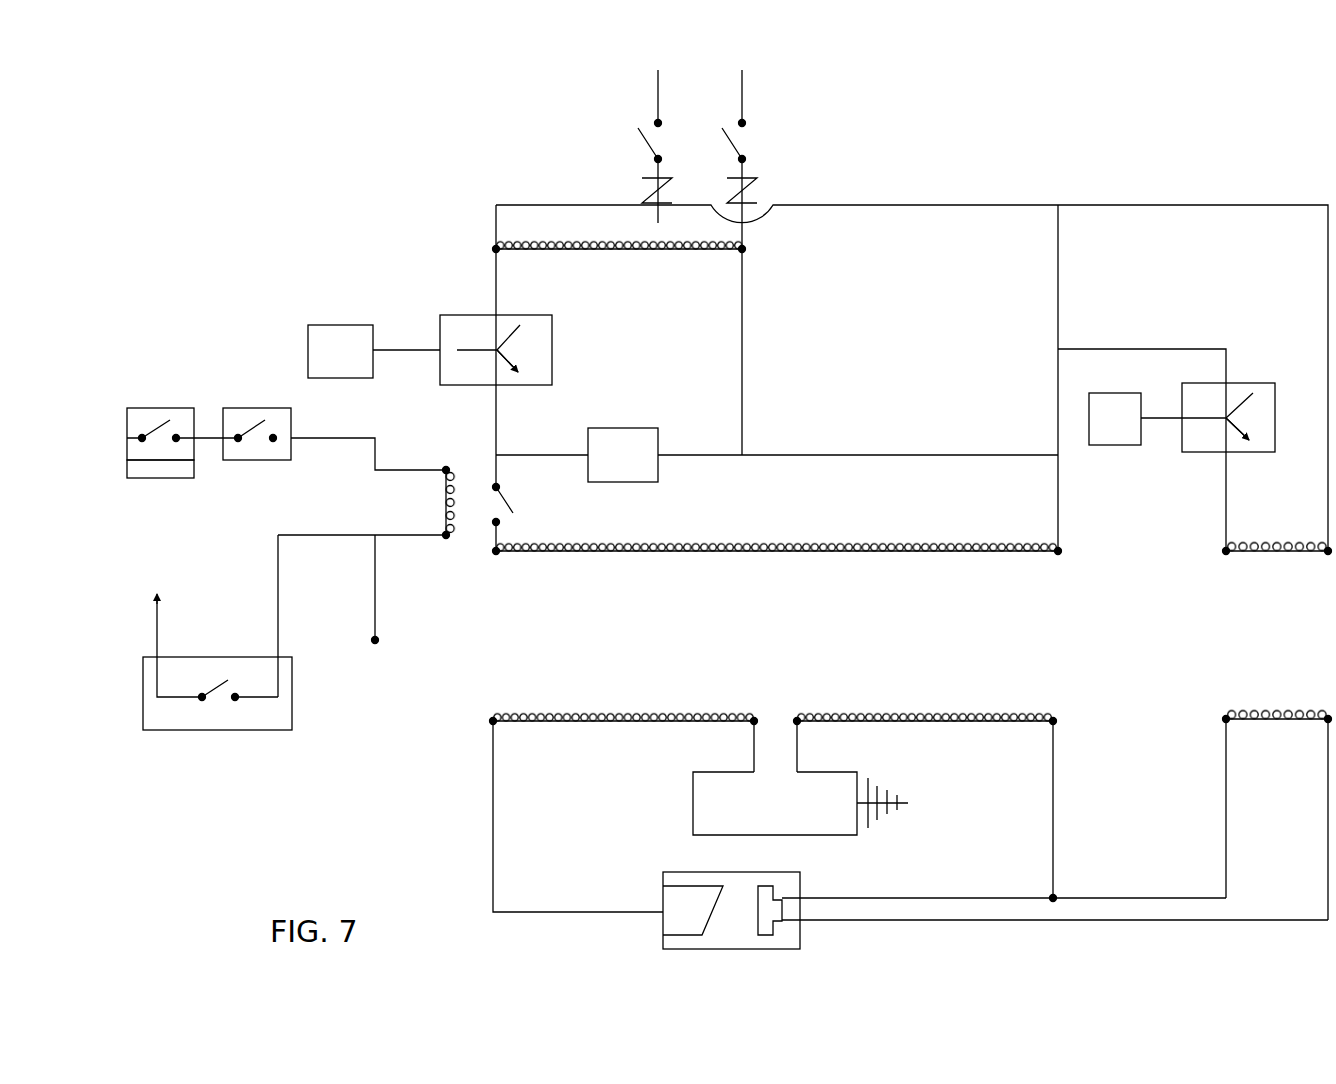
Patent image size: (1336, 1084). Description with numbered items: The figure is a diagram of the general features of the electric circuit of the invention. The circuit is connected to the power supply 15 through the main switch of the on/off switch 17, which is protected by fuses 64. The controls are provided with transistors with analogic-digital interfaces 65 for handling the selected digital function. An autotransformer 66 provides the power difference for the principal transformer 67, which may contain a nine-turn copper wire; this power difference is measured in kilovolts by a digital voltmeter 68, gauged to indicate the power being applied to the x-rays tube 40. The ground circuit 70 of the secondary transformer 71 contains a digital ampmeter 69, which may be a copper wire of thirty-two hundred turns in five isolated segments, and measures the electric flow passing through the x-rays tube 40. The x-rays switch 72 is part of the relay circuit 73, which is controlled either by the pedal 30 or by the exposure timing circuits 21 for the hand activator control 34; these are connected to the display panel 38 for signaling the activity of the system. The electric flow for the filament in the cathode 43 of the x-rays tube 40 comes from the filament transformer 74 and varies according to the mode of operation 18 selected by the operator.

The power supply 15 is at (657, 104).
The on/off switch 17 is at (734, 140).
The fuses 64 is at (640, 191).
The autotransformer 66 is at (548, 248).
The digital voltmeter 68 is at (332, 325).
The transistors with analogic-digital interfaces 65 is at (485, 313).
The hand activator control 34 is at (160, 427).
The exposure timing circuits 21 is at (260, 408).
The relay circuit 73 is at (453, 517).
The x-rays switch 72 is at (498, 498).
The LCD panel 38 is at (622, 428).
The principal transformer 67 is at (628, 557).
The pedal 30 is at (219, 690).
The digital controls 18 is at (1114, 445).
The filament transformer 74 is at (1276, 559).
The secondary transformer 71 is at (705, 717).
The digital ampmeter 69 is at (693, 802).
The ground circuit 70 is at (895, 797).
The x-rays tube 40 is at (663, 940).
The cathode 43 is at (768, 927).